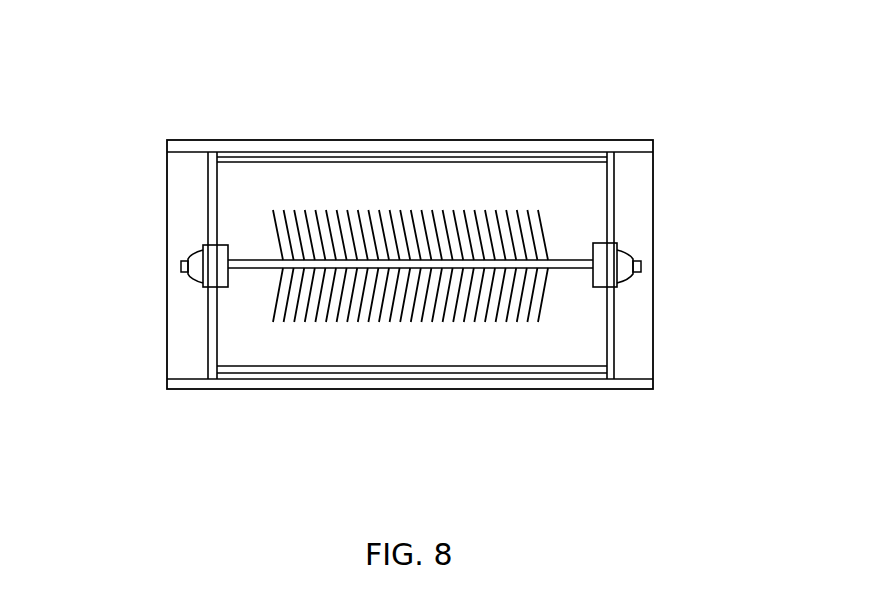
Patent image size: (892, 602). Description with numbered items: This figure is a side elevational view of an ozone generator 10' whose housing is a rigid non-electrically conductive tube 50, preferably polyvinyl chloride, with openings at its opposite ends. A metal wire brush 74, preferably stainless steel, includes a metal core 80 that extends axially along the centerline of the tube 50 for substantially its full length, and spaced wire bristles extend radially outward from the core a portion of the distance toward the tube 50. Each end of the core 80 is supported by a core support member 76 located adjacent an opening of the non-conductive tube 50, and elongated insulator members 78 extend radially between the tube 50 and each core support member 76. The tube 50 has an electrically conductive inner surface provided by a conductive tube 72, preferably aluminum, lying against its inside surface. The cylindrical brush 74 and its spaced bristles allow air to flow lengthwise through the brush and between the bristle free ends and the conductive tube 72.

The ozone generator 10' is at (405, 242).
The non-electrically conductive tube 50 is at (400, 141).
The conductive tube 72 is at (472, 163).
The metal wire brush 74 is at (466, 293).
The core support member 76 is at (200, 280).
The insulator member 78 is at (612, 203).
The metal core 80 is at (250, 262).